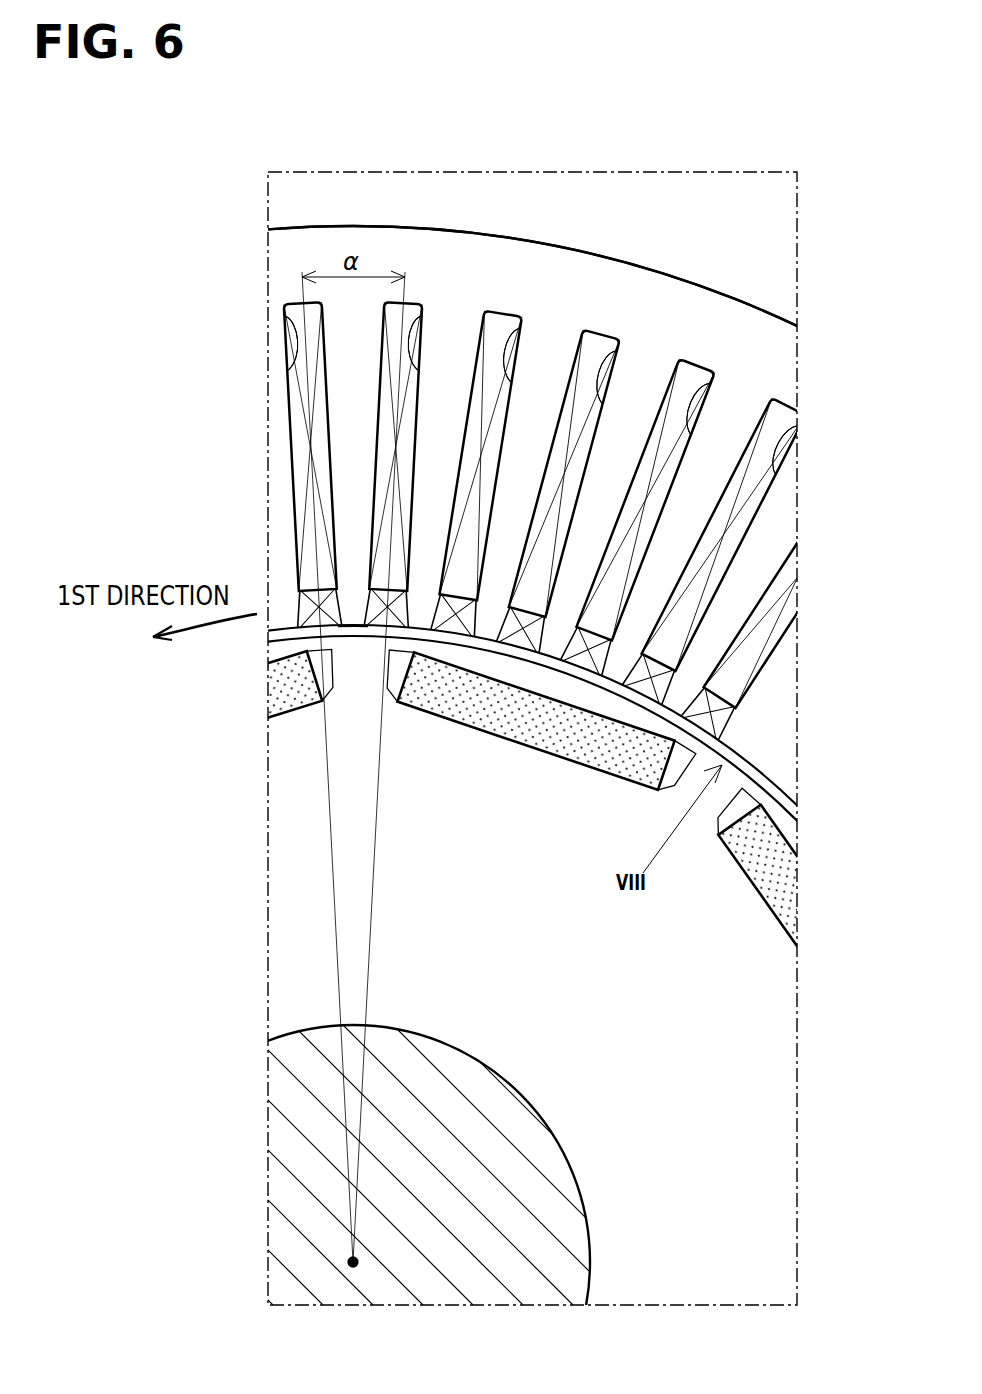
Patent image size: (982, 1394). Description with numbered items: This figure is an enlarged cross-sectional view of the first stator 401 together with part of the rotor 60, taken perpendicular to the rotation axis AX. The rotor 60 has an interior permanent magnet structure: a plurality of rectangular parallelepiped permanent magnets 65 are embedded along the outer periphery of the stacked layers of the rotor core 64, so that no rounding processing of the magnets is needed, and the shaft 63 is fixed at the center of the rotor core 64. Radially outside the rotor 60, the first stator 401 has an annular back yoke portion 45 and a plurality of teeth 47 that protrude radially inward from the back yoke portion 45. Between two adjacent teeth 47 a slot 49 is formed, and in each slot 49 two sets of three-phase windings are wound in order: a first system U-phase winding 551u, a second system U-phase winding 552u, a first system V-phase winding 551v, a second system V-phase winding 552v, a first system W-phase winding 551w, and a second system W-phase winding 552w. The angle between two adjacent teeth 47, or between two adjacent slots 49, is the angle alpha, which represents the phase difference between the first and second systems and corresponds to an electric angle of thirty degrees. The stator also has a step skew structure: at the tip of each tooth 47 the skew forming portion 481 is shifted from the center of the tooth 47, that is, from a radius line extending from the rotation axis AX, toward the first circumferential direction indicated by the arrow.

The back yoke portion 45 is at (355, 238).
The tooth 47 is at (357, 375).
The slot 49 is at (290, 330).
The first stator 401 is at (491, 810).
The skew forming portion 481 is at (358, 640).
The first system U-phase winding 551u is at (293, 310).
The second system U-phase winding 552u is at (412, 317).
The first system V-phase winding 551v is at (502, 330).
The second system V-phase winding 552v is at (598, 345).
The first system W-phase winding 551w is at (690, 370).
The second system W-phase winding 552w is at (780, 420).
The permanent magnet 65 is at (290, 685).
The rotor core 64 is at (700, 1129).
The shaft 63 is at (318, 1130).
The rotor 60 is at (489, 967).
The rotation axis AX is at (353, 1262).